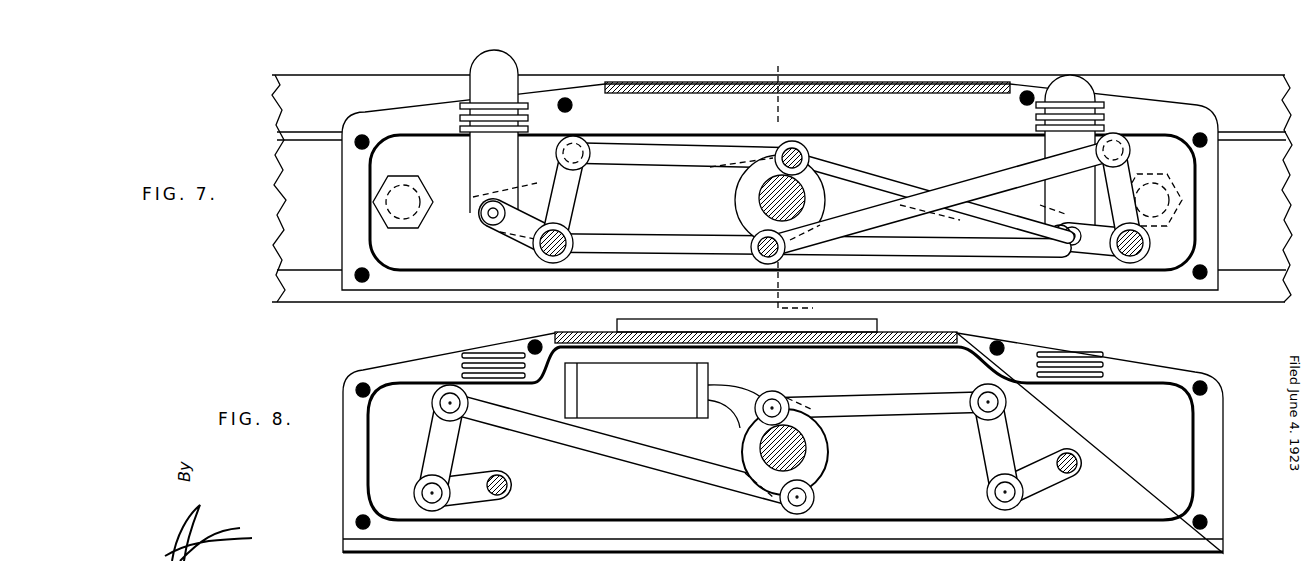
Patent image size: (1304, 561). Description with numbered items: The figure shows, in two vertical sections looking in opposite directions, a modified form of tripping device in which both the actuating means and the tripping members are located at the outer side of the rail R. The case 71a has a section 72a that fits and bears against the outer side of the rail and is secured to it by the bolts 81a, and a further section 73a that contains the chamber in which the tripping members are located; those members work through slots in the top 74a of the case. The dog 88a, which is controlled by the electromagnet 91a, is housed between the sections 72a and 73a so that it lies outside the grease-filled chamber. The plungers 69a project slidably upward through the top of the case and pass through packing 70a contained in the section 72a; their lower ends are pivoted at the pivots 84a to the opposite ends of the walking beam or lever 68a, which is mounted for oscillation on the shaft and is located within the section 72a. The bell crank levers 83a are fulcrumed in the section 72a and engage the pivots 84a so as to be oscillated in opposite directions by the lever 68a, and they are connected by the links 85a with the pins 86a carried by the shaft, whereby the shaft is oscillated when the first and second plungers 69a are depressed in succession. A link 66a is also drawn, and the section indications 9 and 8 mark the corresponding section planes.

In FIG. 7, the rail R is at (276, 110).
In FIG. 7, the case 71a is at (369, 96).
In FIG. 8, the case 71a is at (1209, 358).
In FIG. 7, the section of the case 72a is at (446, 110).
In FIG. 7, the top of the case 74a is at (923, 93).
In FIG. 8, the top of the case 74a is at (867, 343).
In FIG. 7, the packing 70a is at (1100, 107).
In FIG. 7, the plungers 69a is at (480, 150).
In FIG. 7, the bolts 81a is at (400, 206).
In FIG. 7, the pivots 84a is at (477, 228).
In FIG. 8, the pivots 84a is at (518, 487).
In FIG. 7, the bell crank levers 83a is at (568, 203).
In FIG. 8, the bell crank levers 83a is at (725, 447).
In FIG. 7, the links 85a is at (833, 195).
In FIG. 8, the links 85a is at (672, 473).
In FIG. 7, the link bar 66a is at (872, 192).
In FIG. 7, the walking beam or lever 68a is at (806, 180).
In FIG. 7, the dog 88a is at (752, 167).
In FIG. 8, the dog 88a is at (733, 423).
In FIG. 8, the pins 86a is at (778, 397).
In FIG. 8, the electromagnet 91a is at (685, 375).
In FIG. 8, the section of the case 73a is at (1208, 465).
In FIG. 7, the section line 9- 9 is at (777, 86).
In FIG. 7, the section line 8- 8 is at (803, 292).